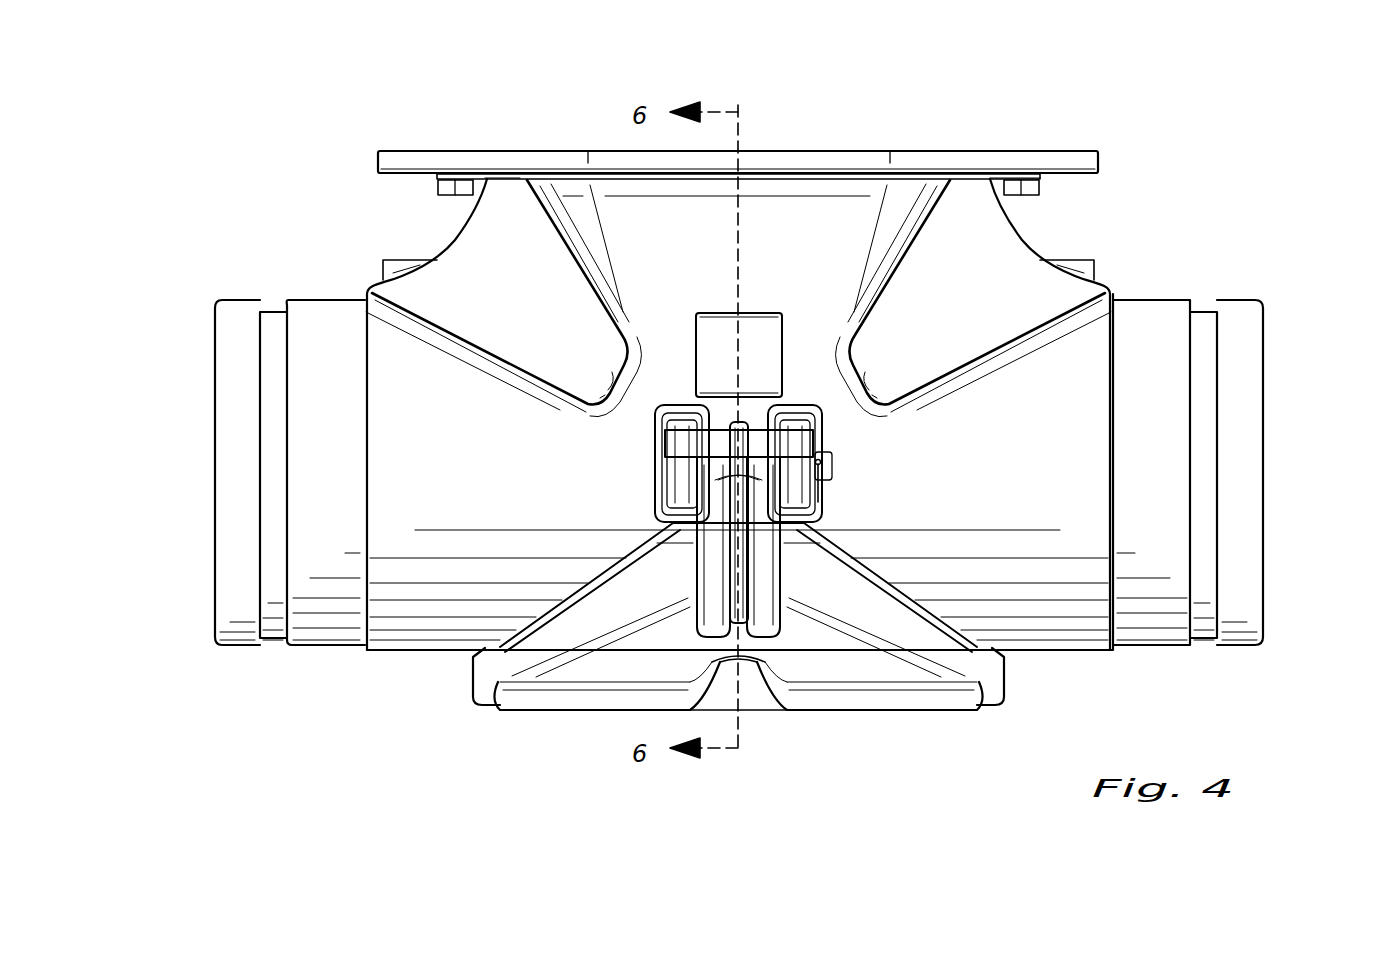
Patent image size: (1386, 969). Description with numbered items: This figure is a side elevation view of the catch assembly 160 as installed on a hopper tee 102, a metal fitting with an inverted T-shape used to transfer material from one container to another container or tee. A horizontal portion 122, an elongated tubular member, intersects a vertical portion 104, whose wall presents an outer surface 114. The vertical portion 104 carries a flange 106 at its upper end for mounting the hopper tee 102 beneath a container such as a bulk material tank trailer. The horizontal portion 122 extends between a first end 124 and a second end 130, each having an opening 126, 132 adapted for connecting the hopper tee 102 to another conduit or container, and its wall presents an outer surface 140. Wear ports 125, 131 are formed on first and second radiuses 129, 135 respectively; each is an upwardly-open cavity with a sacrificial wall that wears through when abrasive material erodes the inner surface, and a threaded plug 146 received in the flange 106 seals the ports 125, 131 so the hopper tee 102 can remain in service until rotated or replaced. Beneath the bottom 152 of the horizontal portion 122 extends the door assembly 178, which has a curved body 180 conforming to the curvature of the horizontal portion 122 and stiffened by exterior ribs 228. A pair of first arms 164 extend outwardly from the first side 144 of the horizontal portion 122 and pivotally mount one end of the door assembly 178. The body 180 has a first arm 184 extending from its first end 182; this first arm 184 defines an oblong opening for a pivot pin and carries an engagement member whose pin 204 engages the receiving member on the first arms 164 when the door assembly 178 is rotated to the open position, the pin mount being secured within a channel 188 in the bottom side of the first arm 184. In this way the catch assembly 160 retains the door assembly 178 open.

The hopper tee 102 is at (222, 145).
The vertical portion 104 is at (1178, 197).
The flange 106 is at (1064, 148).
The outer surface 114 is at (718, 238).
The horizontal portion 122 is at (418, 718).
The first end 124 is at (210, 360).
The wear port 125 is at (380, 262).
The opening 126 is at (212, 490).
The first radius 129 is at (495, 312).
The second end 130 is at (1264, 355).
The wear port 131 is at (1095, 262).
The opening 132 is at (1264, 510).
The second radius 135 is at (982, 322).
The outer surface 140 is at (1058, 513).
The first side 144 is at (430, 592).
The plug 146 is at (437, 188).
The bottom 152 is at (1055, 652).
The catch assembly 160 is at (870, 446).
The first arms 164 is at (663, 460).
The door assembly 178 is at (966, 752).
The body 180 is at (590, 670).
The first end 182 is at (610, 487).
The first arm 184 is at (697, 563).
The channel 188 is at (780, 563).
The pin 204 is at (796, 445).
The ribs 228 is at (840, 697).